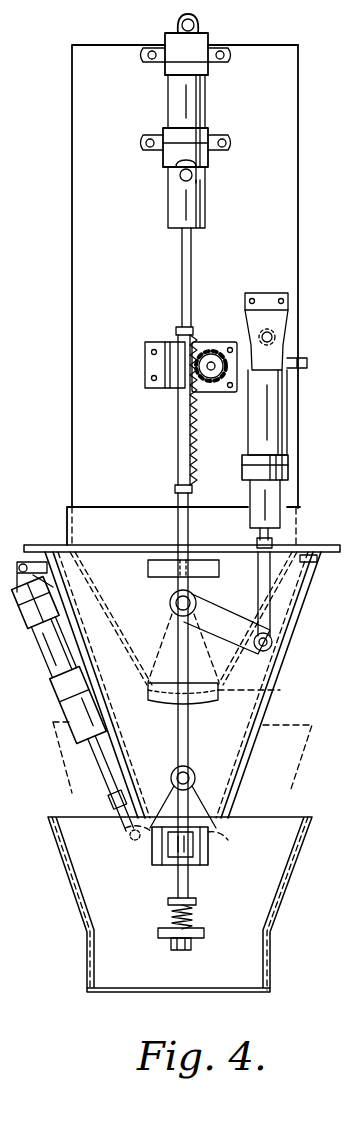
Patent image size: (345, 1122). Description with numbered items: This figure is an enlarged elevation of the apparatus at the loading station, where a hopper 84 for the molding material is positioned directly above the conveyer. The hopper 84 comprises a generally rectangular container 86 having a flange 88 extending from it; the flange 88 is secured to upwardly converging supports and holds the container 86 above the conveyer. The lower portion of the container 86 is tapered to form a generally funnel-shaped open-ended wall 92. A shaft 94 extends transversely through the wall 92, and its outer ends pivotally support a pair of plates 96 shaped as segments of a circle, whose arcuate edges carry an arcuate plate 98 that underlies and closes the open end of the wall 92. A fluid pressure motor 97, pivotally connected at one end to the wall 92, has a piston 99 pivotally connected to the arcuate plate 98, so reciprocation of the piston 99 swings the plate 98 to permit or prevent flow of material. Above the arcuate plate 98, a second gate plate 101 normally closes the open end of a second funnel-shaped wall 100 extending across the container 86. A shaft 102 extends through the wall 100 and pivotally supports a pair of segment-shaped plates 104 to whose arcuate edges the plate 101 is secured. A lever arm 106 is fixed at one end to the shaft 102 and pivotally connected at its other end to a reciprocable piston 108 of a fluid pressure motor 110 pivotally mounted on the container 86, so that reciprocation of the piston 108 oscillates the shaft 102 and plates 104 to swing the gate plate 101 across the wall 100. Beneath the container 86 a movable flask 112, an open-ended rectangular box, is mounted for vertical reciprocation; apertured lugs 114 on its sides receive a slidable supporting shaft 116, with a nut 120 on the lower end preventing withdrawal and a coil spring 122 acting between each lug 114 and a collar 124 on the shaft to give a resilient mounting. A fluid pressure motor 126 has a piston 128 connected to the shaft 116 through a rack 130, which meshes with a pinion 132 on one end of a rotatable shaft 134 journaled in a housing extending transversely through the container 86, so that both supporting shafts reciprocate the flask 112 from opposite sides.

The hopper 84 is at (64, 217).
The container 86 is at (296, 243).
The flange 88 is at (36, 545).
The funnel-shaped wall 92 is at (291, 630).
The shaft 94 is at (172, 778).
The plates 96 is at (196, 790).
The fluid pressure motor 97 is at (55, 658).
The arcuate plate 98 is at (212, 840).
The piston 99 is at (100, 768).
The second funnel-shaped wall 100 is at (97, 592).
The second gate plate 101 is at (263, 690).
The shaft 102 is at (171, 604).
The plates 104 is at (150, 648).
The lever arm 106 is at (225, 620).
The piston 108 is at (252, 565).
The fluid pressure motor 110 is at (270, 418).
The flask 112 is at (258, 905).
The apertured lugs 114 is at (204, 932).
The supporting shaft 116 is at (180, 517).
The nut 120 is at (191, 945).
The coil spring 122 is at (193, 913).
The collar 124 is at (192, 898).
The fluid pressure motor 126 is at (196, 105).
The piston 128 is at (181, 263).
The rack 130 is at (177, 435).
The pinion 132 is at (210, 343).
The rotatable shaft 134 is at (215, 392).